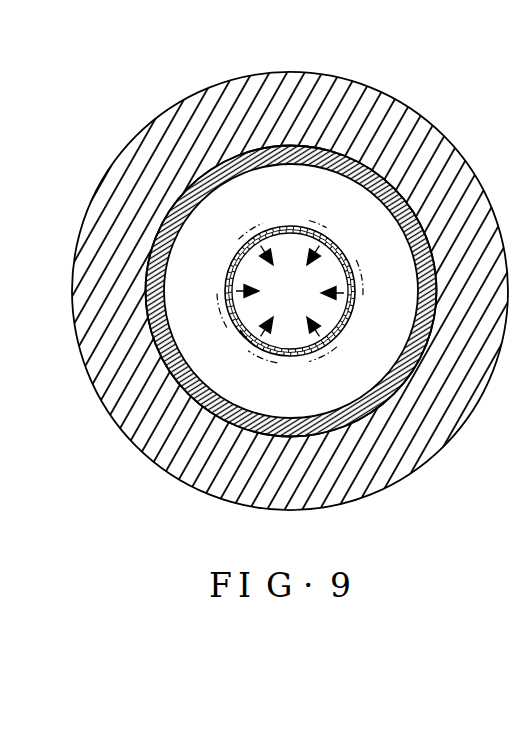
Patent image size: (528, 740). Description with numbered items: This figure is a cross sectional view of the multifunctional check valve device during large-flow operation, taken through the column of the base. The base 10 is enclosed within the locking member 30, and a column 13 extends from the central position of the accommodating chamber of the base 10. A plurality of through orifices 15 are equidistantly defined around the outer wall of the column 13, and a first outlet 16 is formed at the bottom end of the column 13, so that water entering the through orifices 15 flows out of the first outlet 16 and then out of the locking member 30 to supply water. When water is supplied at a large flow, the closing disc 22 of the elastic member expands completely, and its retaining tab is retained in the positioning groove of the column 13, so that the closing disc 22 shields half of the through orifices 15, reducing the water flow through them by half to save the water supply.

The base 10 is at (217, 178).
The column 13 is at (242, 332).
The through orifices 15 is at (228, 287).
The first outlet 16 is at (295, 294).
The closing disc 22 is at (270, 228).
The locking member 30 is at (430, 148).